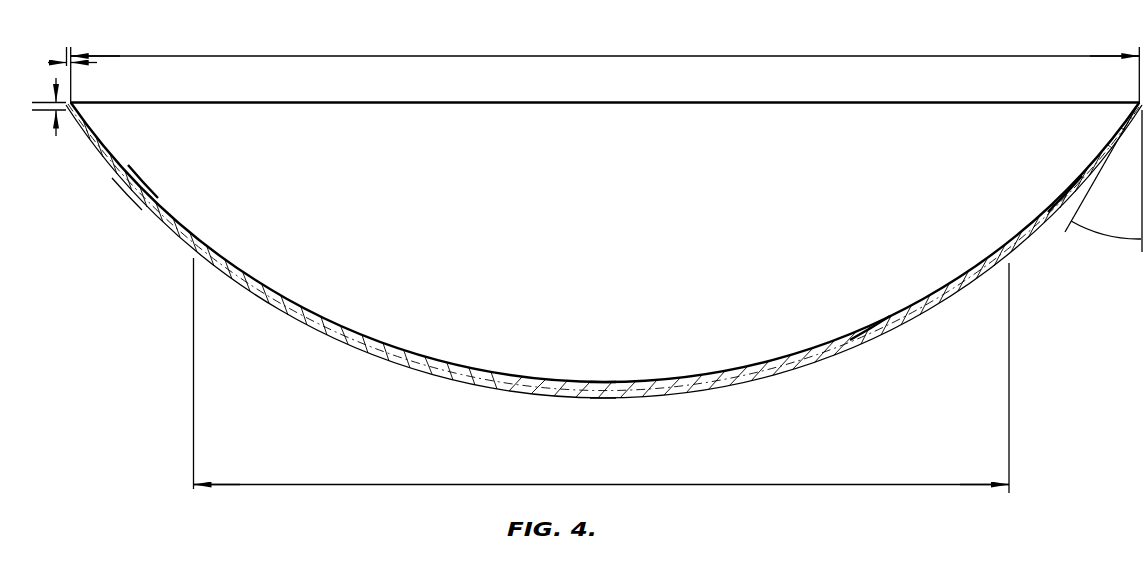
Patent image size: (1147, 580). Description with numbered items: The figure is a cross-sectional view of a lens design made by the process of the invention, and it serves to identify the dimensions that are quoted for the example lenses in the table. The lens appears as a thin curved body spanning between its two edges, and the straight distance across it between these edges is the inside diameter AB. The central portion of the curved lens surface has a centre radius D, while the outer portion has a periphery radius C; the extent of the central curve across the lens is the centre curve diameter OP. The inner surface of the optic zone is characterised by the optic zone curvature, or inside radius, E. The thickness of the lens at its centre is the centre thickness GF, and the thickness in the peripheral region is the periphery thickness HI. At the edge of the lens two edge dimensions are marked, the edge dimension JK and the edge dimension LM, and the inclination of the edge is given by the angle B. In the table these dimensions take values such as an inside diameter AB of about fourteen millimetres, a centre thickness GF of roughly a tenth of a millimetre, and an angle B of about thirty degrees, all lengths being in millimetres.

The inside diameter endpoint A is at (605, 64).
The inside diameter endpoint and edge angle B is at (605, 141).
The periphery radius C is at (1065, 195).
The centre radius D is at (868, 338).
The optic zone curvature (inside radius) E is at (664, 381).
The centre thickness endpoint F is at (603, 381).
The centre thickness endpoint G is at (603, 399).
The periphery thickness endpoint H is at (141, 181).
The periphery thickness endpoint I is at (127, 193).
The edge dimension endpoint J is at (45, 125).
The edge dimension endpoint K is at (49, 94).
The edge dimension endpoint L is at (87, 75).
The edge dimension endpoint M is at (52, 55).
The centre curve diameter endpoint O is at (989, 392).
The centre curve diameter endpoint P is at (597, 387).